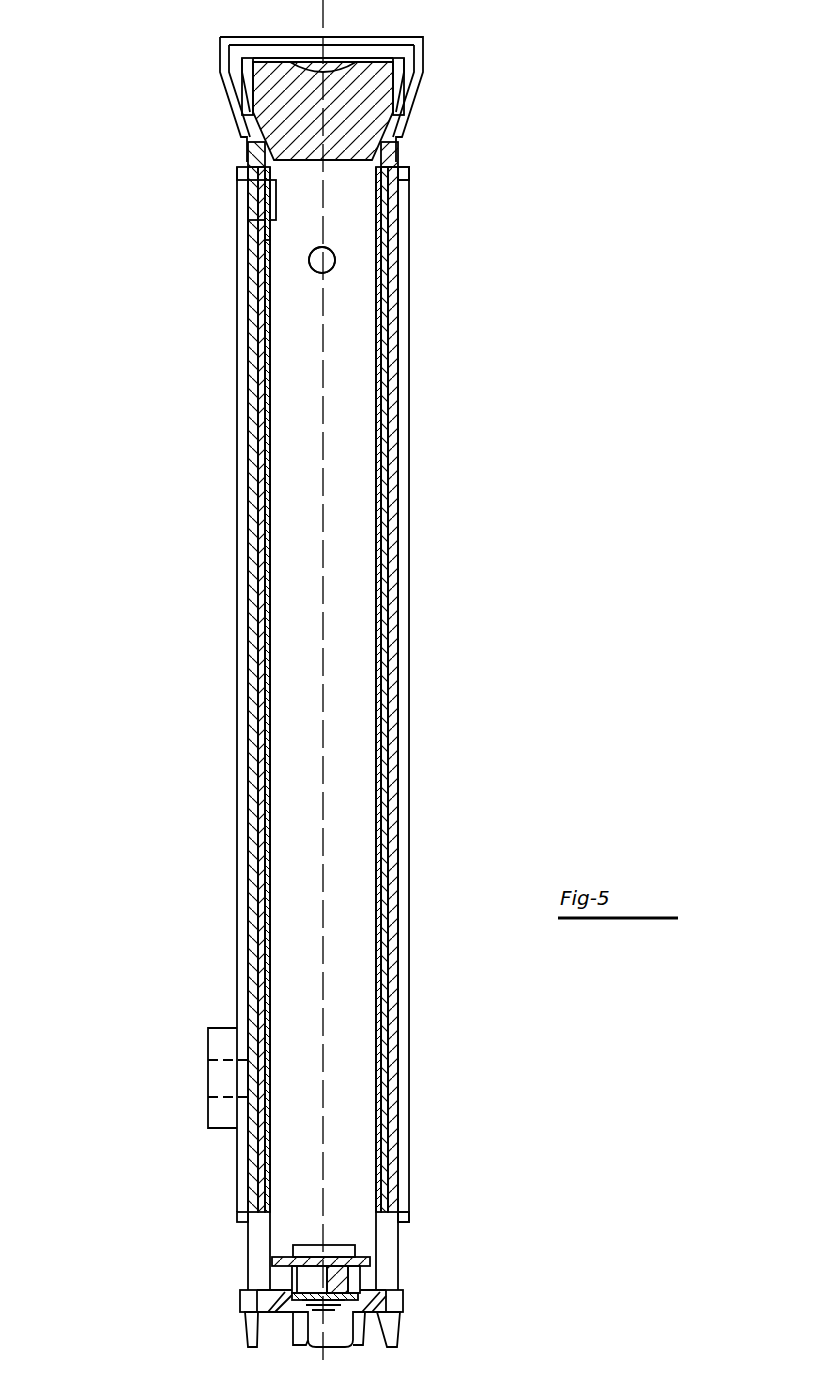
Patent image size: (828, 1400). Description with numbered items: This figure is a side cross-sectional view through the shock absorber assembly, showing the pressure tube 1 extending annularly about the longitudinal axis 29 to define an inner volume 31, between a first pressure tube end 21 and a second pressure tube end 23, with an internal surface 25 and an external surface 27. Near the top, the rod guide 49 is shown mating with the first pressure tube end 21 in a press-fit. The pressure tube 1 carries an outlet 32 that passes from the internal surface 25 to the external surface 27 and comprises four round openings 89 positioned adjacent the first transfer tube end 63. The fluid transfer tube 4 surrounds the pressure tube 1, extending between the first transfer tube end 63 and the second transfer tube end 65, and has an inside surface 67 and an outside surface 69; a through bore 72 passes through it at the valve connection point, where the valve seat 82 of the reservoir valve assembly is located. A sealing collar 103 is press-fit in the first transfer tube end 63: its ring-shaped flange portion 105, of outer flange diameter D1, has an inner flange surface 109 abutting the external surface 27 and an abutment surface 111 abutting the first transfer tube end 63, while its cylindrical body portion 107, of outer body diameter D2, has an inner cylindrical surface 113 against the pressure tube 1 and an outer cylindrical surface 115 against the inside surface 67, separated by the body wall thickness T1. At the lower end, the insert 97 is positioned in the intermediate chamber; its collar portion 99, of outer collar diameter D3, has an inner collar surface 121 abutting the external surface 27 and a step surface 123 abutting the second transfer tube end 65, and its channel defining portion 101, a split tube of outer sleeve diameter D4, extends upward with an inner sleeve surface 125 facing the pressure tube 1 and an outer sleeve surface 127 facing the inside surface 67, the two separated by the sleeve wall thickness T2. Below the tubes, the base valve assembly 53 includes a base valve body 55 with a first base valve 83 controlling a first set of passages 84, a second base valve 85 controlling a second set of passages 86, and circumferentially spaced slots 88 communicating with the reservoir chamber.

The pressure tube 1 is at (250, 150).
The fluid transfer tube 4 is at (410, 500).
The first pressure tube end 21 is at (265, 110).
The second pressure tube end 23 is at (257, 1303).
The internal surface 25 is at (362, 147).
The external surface 27 is at (417, 160).
The longitudinal axis 29 is at (323, 557).
The inner volume 31 is at (356, 603).
The outlet 32 is at (333, 250).
The rod guide 49 is at (247, 66).
The base valve assembly 53 is at (276, 1342).
The base valve body 55 is at (373, 1300).
The first transfer tube end 63 is at (257, 192).
The second transfer tube end 65 is at (272, 1210).
The inside surface 67 is at (258, 266).
The outside surface 69 is at (237, 425).
The through bore 72 is at (226, 1082).
The valve seat 82 is at (215, 1117).
The first base valve 83 is at (290, 1273).
The first set of passages 84 is at (290, 1275).
The second base valve 85 is at (268, 1270).
The second set of passages 86 is at (350, 1275).
The circumferentially spaced slots 88 is at (370, 1330).
The round openings 89 is at (337, 259).
The insert 97 is at (388, 690).
The collar portion 99 is at (410, 1215).
The channel defining portion 101 is at (398, 545).
The sealing collar 103 is at (416, 163).
The flange portion 105 is at (240, 173).
The body portion 107 is at (257, 212).
The inner flange surface 109 is at (270, 162).
The abutment surface 111 is at (403, 180).
The inner cylindrical surface 113 is at (278, 203).
The outer cylindrical surface 115 is at (253, 227).
The inner collar surface 121 is at (272, 1212).
The step surface 123 is at (406, 1205).
The inner sleeve surface 125 is at (378, 630).
The outer sleeve surface 127 is at (388, 568).
The outer flange diameter D1 is at (409, 175).
The outer body diameter D2 is at (258, 230).
The outer collar diameter D3 is at (237, 1220).
The outer sleeve diameter D4 is at (388, 1165).
The body wall thickness T1 is at (330, 212).
The sleeve wall thickness T2 is at (330, 352).